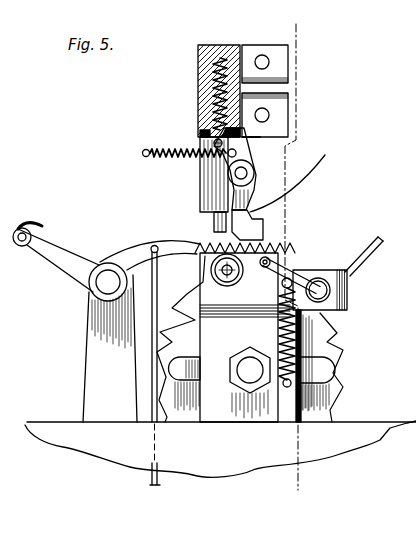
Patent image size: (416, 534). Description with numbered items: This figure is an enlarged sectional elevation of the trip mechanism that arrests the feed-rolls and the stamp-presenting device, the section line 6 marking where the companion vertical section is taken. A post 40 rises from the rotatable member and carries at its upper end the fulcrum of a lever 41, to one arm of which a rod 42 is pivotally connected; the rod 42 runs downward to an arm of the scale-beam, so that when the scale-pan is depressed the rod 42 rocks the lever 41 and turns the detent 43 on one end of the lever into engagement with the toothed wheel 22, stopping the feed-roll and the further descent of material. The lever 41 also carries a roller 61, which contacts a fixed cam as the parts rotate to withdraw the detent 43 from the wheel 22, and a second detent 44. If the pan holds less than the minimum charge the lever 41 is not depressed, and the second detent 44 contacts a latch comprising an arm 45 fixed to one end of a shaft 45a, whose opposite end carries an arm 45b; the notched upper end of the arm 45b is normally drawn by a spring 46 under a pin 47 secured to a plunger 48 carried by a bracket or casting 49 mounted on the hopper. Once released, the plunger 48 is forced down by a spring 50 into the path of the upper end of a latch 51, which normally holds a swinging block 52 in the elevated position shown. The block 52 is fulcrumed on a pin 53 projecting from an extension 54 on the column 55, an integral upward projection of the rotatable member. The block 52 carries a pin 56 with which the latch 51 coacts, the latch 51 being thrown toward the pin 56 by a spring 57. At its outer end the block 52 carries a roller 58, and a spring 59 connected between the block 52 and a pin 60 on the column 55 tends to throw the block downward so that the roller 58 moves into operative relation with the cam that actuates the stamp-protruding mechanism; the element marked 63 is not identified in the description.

The section line 6- 6 is at (295, 260).
The toothed wheel 22 is at (333, 380).
The post 40 is at (100, 347).
The lever 41 is at (63, 265).
The rod 42 is at (155, 483).
The detent 43 is at (262, 233).
The second detent 44 is at (253, 214).
The arm 45 is at (255, 197).
The shaft 45a is at (253, 163).
The arm 45b is at (262, 137).
The spring 46 is at (176, 159).
The pin 47 is at (214, 141).
The plunger 48 is at (213, 220).
The bracket or casting 49 is at (198, 83).
The spring 50 is at (221, 46).
The latch 51 is at (272, 258).
The swinging block 52 is at (350, 265).
The pin 53 is at (348, 278).
The extension 54 is at (348, 302).
The column 55 is at (265, 398).
The pin 56 is at (263, 266).
The spring 57 is at (162, 231).
The roller 58 is at (227, 274).
The spring 59 is at (301, 342).
The pin 60 is at (287, 388).
The roller 61 is at (40, 226).
The rod end 63 is at (381, 239).